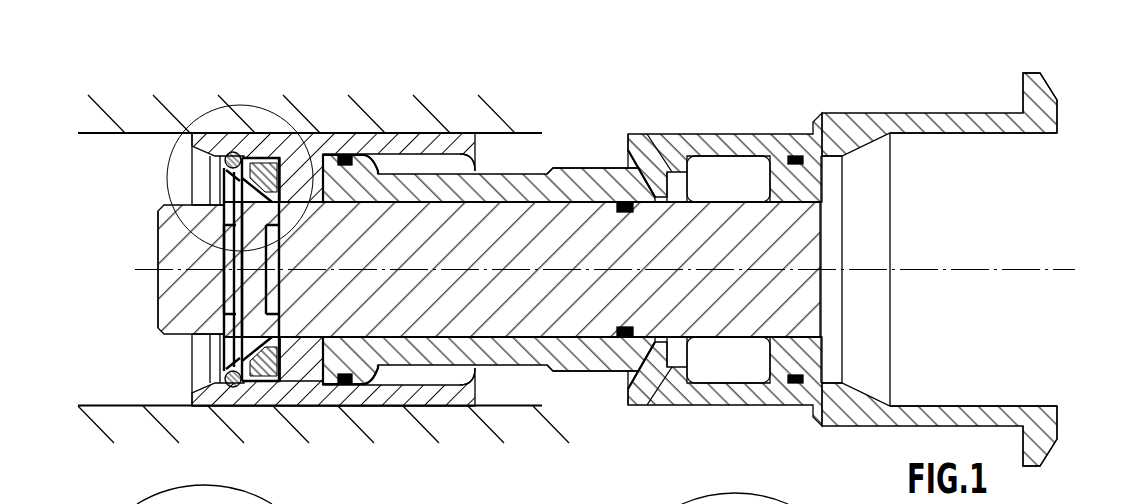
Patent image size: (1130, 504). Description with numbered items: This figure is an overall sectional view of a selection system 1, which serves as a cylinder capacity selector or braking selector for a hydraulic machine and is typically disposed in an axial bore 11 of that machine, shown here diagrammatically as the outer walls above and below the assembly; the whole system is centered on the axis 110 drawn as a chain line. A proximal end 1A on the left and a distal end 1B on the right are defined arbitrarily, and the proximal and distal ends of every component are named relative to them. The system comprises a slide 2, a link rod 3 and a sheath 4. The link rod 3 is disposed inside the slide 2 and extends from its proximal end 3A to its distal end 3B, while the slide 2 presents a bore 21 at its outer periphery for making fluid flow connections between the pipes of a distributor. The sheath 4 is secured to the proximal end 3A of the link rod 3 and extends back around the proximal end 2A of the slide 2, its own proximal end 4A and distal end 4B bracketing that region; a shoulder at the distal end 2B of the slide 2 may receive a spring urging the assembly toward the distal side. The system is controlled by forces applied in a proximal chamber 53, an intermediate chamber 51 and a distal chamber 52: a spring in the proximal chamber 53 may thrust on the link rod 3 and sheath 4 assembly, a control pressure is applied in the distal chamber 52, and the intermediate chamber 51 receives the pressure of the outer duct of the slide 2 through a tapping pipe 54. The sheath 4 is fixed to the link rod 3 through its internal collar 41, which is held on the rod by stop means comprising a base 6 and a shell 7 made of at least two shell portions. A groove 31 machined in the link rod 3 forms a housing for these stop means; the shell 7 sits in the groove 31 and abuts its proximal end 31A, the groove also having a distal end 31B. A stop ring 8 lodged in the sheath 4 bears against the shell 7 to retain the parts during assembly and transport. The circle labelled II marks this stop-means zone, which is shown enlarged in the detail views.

The selection system 1 is at (597, 262).
The proximal end 1A is at (303, 232).
The distal end 1B is at (872, 265).
The slide 2 is at (489, 273).
The proximal end of the slide 2A is at (333, 183).
The distal end of the slide 2B is at (1037, 92).
The bore 21 is at (567, 170).
The link rod 3 is at (500, 269).
The proximal end of the link rod 3A is at (170, 308).
The second end of shaft 3B is at (807, 233).
The groove 31 is at (255, 269).
The proximal end of the groove 31A is at (222, 243).
The distal end of the groove 31B is at (288, 214).
The sheath 4 is at (325, 232).
The housing first end 4A is at (207, 148).
The housing groove 4B is at (462, 142).
The internal collar 41 is at (300, 353).
The intermediate chamber 51 is at (712, 167).
The distal chamber 52 is at (966, 205).
The proximal chamber 53 is at (113, 195).
The tapping pipe 54 is at (638, 153).
The base 6 is at (265, 170).
The shell 7 is at (242, 203).
The stop ring 8 is at (236, 151).
The axial bore 11 is at (112, 124).
The axis 110 is at (1062, 276).
The detail section II is at (218, 107).